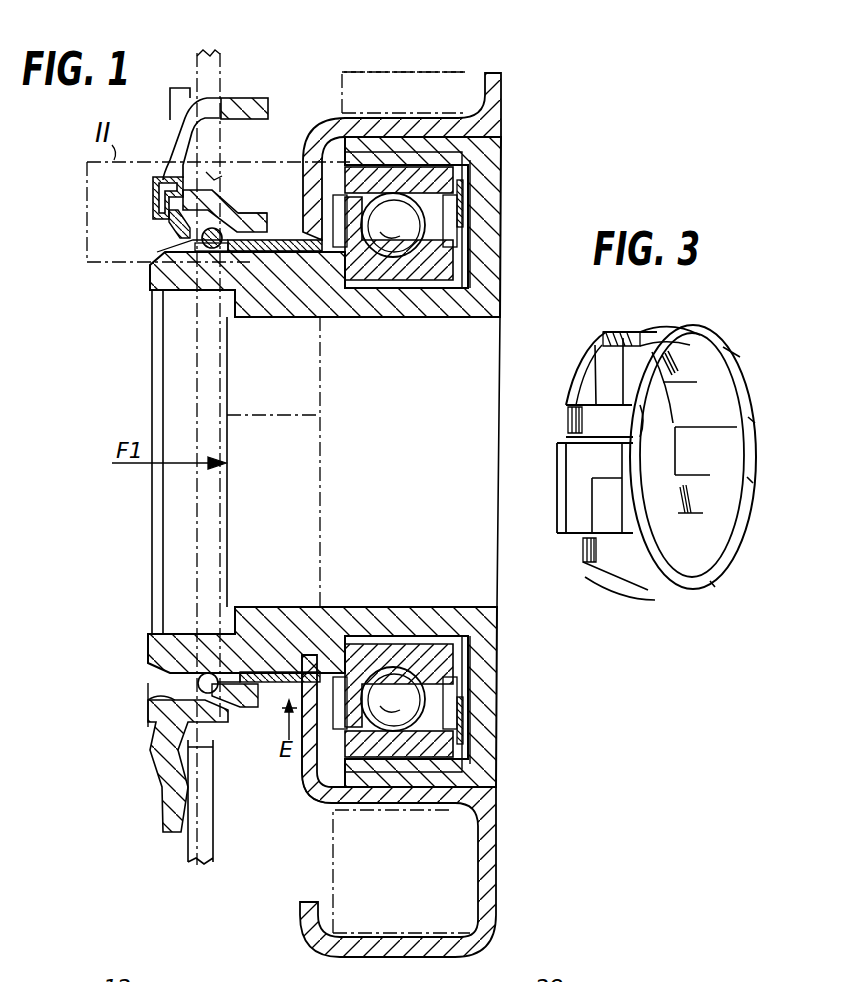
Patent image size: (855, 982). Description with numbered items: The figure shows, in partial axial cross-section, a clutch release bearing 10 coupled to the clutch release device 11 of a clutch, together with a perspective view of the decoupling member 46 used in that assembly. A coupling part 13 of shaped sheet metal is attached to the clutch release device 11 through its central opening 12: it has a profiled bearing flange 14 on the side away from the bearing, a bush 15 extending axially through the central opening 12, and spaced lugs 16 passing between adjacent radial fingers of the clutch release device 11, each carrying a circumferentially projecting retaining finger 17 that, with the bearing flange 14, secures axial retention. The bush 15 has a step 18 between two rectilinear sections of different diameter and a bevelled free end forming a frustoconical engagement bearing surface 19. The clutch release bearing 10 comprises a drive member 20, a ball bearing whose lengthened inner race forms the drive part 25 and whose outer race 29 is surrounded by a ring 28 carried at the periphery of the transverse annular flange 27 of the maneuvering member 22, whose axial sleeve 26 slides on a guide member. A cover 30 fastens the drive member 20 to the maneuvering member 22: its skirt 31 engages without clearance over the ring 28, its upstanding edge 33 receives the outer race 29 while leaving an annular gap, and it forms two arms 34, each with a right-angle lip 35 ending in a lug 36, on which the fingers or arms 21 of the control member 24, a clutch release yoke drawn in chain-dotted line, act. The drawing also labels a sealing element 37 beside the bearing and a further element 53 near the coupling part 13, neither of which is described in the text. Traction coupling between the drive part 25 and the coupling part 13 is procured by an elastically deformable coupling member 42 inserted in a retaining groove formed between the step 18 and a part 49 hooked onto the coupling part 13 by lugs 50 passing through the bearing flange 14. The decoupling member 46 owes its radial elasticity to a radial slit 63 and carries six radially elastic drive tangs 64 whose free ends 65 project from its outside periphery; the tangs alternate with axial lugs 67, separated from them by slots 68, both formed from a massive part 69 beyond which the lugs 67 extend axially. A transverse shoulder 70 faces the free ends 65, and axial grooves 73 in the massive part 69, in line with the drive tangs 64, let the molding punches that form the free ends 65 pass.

In FIG. 1, the clutch release bearing 10 is at (540, 132).
In FIG. 1, the clutch release device 11 is at (226, 62).
In FIG. 1, the central opening 12 is at (208, 170).
In FIG. 1, the coupling part 13 is at (150, 787).
In FIG. 1, the bearing flange 14 is at (168, 838).
In FIG. 1, the bush 15 is at (244, 218).
In FIG. 1, the lugs 16 is at (203, 103).
In FIG. 1, the retaining finger 17 is at (258, 95).
In FIG. 1, the step 18 is at (222, 207).
In FIG. 1, the frustoconical engagement bearing surface 19 is at (262, 238).
In FIG. 1, the drive member 20 is at (402, 296).
In FIG. 1, the fingers or arms 21 is at (465, 72).
In FIG. 1, the maneuvering member 22 is at (508, 196).
In FIG. 1, the control member 24 is at (320, 865).
In FIG. 1, the drive part 25 is at (182, 280).
In FIG. 1, the axial sleeve 26 is at (250, 314).
In FIG. 1, the transverse annular flange 27 is at (487, 716).
In FIG. 1, the ring 28 is at (430, 780).
In FIG. 1, the outer race 29 is at (412, 778).
In FIG. 1, the cover 30 is at (308, 805).
In FIG. 1, the skirt 31 is at (382, 785).
In FIG. 1, the upstanding edge 33 is at (306, 756).
In FIG. 1, the arms 34 is at (497, 90).
In FIG. 1, the right-angle lip 35 is at (372, 947).
In FIG. 1, the lug 36 is at (300, 910).
In FIG. 1, the seal 37 is at (463, 215).
In FIG. 1, the coupling member 42 is at (200, 703).
In FIG. 1, the decoupling member 46 is at (270, 694).
In FIG. 3, the decoupling member 46 is at (647, 478).
In FIG. 1, the part 49 is at (150, 724).
In FIG. 1, the lugs 50 is at (158, 177).
In FIG. 1, the seal lip 53 is at (180, 238).
In FIG. 1, the radial slit 63 is at (278, 414).
In FIG. 3, the radial slit 63 is at (738, 420).
In FIG. 3, the drive tangs 64 is at (688, 360).
In FIG. 3, the free end 65 is at (615, 333).
In FIG. 3, the axial lugs 67 is at (600, 355).
In FIG. 3, the slots 68 is at (605, 340).
In FIG. 3, the massive part 69 is at (652, 592).
In FIG. 3, the transverse shoulder 70 is at (598, 360).
In FIG. 3, the axial grooves 73 is at (745, 390).